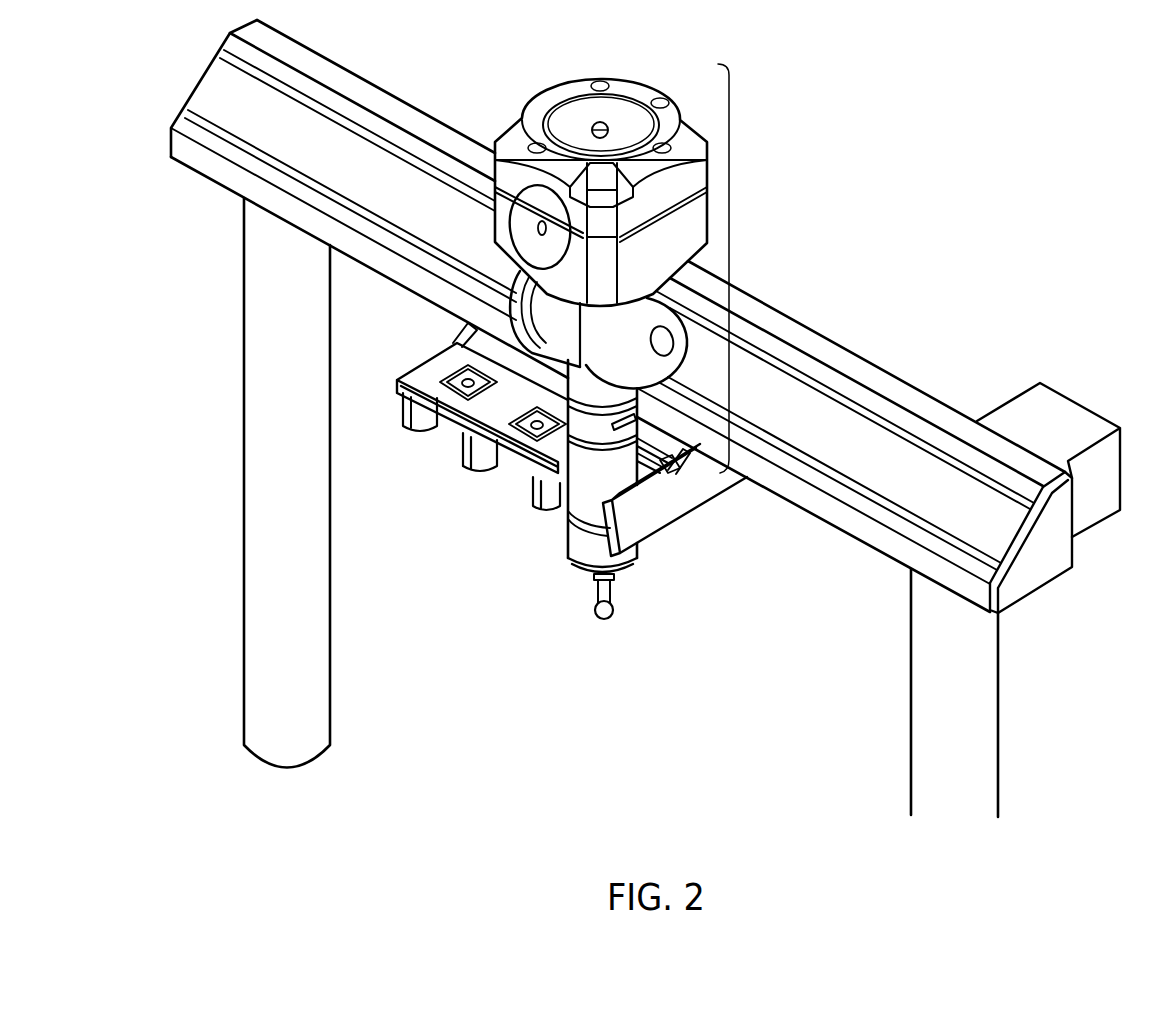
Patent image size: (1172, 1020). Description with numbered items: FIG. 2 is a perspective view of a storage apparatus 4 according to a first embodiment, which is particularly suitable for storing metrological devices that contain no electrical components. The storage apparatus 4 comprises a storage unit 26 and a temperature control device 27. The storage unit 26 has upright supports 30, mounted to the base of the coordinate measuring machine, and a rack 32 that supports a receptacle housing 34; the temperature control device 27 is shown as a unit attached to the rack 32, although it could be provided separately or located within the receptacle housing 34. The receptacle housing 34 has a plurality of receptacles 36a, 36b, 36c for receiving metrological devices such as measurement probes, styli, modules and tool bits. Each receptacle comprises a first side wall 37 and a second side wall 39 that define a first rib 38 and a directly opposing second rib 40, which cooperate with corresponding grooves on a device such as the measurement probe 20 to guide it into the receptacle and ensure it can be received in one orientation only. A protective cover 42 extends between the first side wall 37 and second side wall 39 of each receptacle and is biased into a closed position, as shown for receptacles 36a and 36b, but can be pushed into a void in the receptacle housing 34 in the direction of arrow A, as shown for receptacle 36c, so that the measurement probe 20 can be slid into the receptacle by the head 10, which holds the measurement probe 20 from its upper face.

The storage apparatus 4 is at (1035, 173).
The head 10 is at (729, 277).
The measurement probe 20 is at (565, 620).
The storage unit 26 is at (882, 296).
The temperature control device 27 is at (1078, 421).
The upright supports 30 is at (247, 352).
The rack 32 is at (838, 422).
The receptacle housing 34 is at (650, 520).
The receptacle 36a is at (399, 447).
The receptacle 36b is at (467, 488).
The receptacle 36c is at (542, 530).
The first side wall 37 is at (407, 418).
The first rib 38 is at (418, 423).
The second side wall 39 is at (517, 480).
The second rib 40 is at (465, 453).
The protective cover 42 is at (550, 450).
The arrow A is at (793, 553).